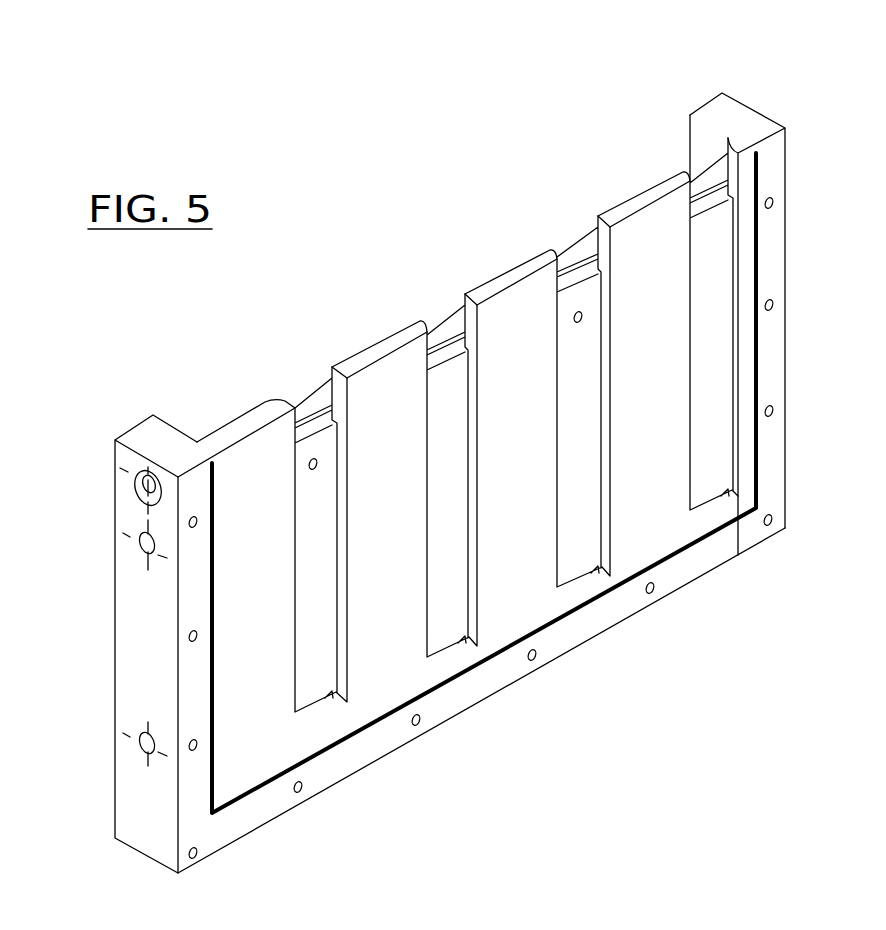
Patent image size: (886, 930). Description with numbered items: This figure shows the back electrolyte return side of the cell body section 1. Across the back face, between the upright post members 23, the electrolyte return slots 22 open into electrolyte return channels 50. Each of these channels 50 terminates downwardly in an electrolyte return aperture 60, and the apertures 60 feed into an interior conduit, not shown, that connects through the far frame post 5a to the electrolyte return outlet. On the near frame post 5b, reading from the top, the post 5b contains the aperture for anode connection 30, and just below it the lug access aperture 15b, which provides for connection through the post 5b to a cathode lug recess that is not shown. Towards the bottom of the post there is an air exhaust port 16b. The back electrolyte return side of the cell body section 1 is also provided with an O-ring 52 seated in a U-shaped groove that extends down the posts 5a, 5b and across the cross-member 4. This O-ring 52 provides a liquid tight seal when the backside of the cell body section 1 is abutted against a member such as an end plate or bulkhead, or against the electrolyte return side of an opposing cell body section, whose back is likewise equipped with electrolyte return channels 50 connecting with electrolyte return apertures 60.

The cell body section 1 is at (370, 176).
The cross-member 4 is at (568, 630).
The far frame post 5a is at (778, 282).
The near frame post 5b is at (159, 648).
The electrolyte return slot 22 is at (703, 185).
The upright post member 23 is at (515, 303).
The aperture for anode connection 30 is at (140, 488).
The lug access aperture 15b is at (140, 546).
The air exhaust port 16b is at (140, 747).
The electrolyte return channel 50 is at (582, 390).
The O-ring 52 is at (676, 555).
The electrolyte return aperture 60 is at (470, 742).